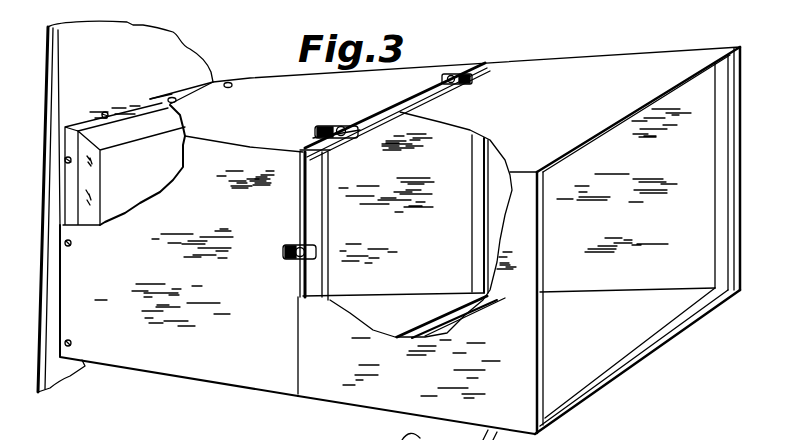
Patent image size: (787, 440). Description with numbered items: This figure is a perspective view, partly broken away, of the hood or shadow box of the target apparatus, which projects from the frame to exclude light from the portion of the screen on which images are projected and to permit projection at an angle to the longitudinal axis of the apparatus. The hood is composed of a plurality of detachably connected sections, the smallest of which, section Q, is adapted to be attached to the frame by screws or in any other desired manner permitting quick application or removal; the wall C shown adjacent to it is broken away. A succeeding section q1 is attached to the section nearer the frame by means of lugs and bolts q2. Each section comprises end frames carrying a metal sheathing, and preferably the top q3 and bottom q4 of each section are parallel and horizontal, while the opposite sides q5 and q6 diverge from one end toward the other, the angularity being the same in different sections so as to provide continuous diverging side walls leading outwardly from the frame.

The wall C is at (173, 48).
The smallest section of hood or shadow box Q is at (400, 226).
The succeeding section q1 is at (445, 109).
The lugs and bolts q2 is at (451, 72).
The top q3 is at (637, 223).
The bottom q4 is at (509, 311).
The side q5 is at (214, 378).
The side q6 is at (393, 408).